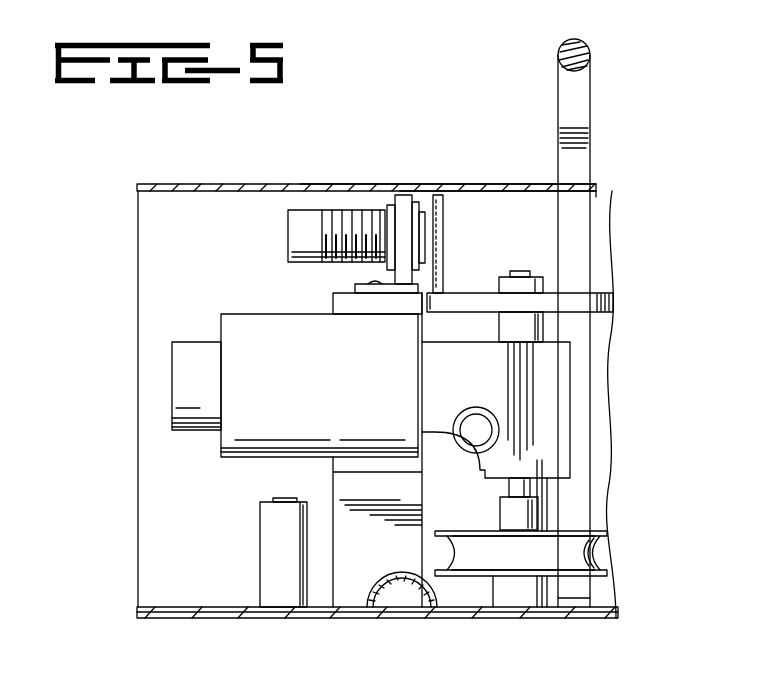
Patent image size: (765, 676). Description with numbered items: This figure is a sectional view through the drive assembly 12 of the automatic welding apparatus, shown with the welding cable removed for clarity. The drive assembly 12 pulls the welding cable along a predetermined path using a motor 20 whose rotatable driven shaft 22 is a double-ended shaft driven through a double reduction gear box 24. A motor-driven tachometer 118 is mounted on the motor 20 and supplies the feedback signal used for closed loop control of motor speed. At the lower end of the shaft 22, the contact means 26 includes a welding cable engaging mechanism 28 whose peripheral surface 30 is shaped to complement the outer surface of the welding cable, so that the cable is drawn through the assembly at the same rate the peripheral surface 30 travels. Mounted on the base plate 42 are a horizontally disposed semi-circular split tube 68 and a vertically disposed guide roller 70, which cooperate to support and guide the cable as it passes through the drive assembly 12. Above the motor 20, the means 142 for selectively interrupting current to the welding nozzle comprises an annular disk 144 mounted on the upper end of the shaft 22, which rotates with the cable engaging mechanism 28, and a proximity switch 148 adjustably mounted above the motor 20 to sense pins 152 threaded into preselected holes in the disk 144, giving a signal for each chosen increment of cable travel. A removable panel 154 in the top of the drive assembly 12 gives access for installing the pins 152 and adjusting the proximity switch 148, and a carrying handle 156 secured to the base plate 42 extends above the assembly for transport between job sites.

The drive assembly 12 is at (125, 306).
The motor 20 is at (322, 392).
The rotatable driven shaft 22 is at (521, 272).
The double reduction gear box 24 is at (480, 387).
The contact means 26 is at (608, 585).
The welding cable engaging mechanism 28 is at (477, 563).
The peripheral surface 30 is at (600, 550).
The base plate 42 is at (316, 610).
The semi-circular split tube 68 is at (392, 607).
The guide roller 70 is at (270, 554).
The tachometer 118 is at (178, 388).
The means for selectively interrupting current flow 142 is at (441, 181).
The annular disk 144 is at (613, 303).
The proximity switch 148 is at (352, 222).
The pins 152 is at (442, 244).
The removable panel 154 is at (479, 186).
The carrying handle 156 is at (583, 64).